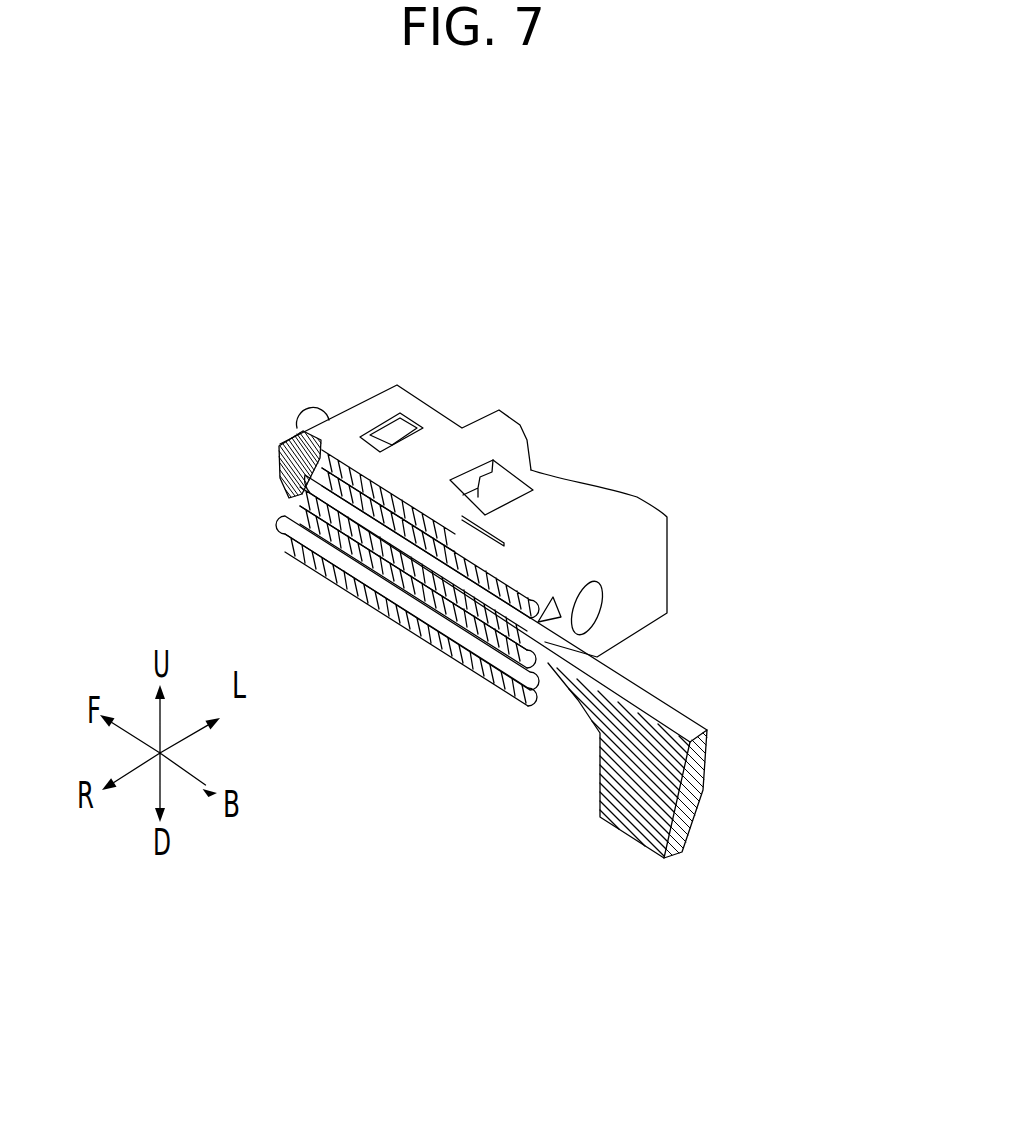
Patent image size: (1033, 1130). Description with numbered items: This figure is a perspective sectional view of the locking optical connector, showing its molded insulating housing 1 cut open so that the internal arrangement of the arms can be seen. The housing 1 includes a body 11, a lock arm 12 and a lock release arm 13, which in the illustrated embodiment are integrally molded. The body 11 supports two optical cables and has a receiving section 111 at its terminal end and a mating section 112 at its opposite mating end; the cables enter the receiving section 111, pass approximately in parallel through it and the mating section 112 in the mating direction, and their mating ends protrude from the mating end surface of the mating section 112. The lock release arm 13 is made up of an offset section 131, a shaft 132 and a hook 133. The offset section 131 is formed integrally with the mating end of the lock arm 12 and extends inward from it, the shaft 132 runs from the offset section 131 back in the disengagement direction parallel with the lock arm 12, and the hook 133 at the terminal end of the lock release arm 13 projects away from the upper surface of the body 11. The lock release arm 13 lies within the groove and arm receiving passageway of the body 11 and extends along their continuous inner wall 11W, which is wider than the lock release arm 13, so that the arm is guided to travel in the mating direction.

The housing 1 is at (681, 405).
The body 11 is at (617, 349).
The receiving section 111 is at (528, 468).
The mating section 112 is at (433, 427).
The inner wall 11W is at (288, 535).
The lock arm 12 is at (358, 456).
The lock release arm 13 is at (433, 603).
The offset section 131 is at (283, 497).
The shaft 132 is at (487, 655).
The hook 133 is at (600, 815).